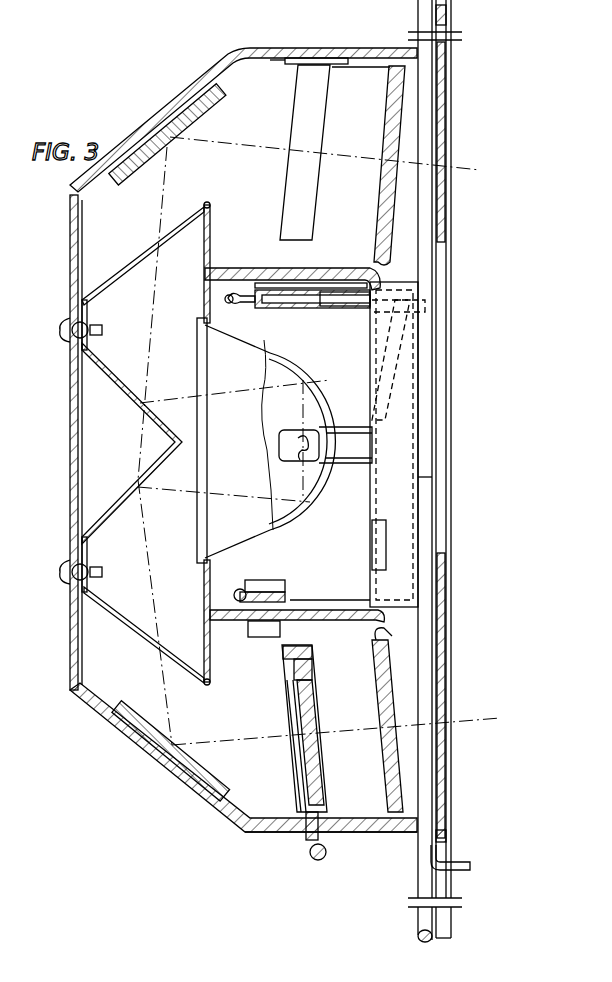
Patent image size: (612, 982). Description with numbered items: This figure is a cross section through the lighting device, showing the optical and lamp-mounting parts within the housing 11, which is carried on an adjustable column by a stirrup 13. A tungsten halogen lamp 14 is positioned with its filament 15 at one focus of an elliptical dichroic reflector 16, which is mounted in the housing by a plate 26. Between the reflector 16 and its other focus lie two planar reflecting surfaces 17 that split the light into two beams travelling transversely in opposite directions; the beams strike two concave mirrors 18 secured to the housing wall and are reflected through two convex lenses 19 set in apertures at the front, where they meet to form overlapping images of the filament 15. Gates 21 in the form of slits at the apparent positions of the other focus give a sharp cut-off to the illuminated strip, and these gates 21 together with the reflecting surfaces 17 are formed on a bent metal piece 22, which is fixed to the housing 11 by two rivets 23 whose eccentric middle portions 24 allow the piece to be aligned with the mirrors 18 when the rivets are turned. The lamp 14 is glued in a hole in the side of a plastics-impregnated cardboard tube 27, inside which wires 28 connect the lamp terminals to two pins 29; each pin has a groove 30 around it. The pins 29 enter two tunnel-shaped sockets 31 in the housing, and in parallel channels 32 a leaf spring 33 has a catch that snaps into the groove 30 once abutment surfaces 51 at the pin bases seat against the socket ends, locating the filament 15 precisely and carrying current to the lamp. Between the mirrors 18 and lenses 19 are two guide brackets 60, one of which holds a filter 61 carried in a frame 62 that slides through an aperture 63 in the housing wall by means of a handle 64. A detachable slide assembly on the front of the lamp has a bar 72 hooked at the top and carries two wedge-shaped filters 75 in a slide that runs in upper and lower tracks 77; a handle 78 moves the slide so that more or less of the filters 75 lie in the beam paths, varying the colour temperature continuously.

The housing 11 is at (258, 833).
The stirrup 13 is at (258, 592).
The tungsten halogen lamp 14 is at (308, 462).
The filament 15 is at (300, 432).
The elliptical dichroic reflector 16 is at (295, 366).
The planar reflecting surfaces 17 is at (108, 380).
The concave mirrors 18 is at (138, 165).
The convex lenses 19 is at (380, 190).
The gates 21 is at (128, 265).
The bent metal piece 22 is at (125, 390).
The rivets 23 is at (68, 336).
The eccentric middle portions 24 is at (90, 324).
The plate 26 is at (204, 255).
The plastics-impregnated cardboard tube 27 is at (418, 332).
The wires 28 is at (380, 380).
The pins 29 is at (323, 305).
The groove 30 is at (242, 304).
The sockets 31 is at (282, 308).
The channels 32 is at (262, 292).
The leaf spring 33 is at (292, 292).
The abutment surfaces 51 is at (368, 595).
The guide brackets 60 is at (290, 760).
The filter 61 is at (308, 700).
The frame 62 is at (305, 656).
The aperture 63 is at (308, 835).
The handle 64 is at (326, 852).
The bar 72 is at (446, 412).
The wedge-shaped filters 75 is at (442, 192).
The tracks 77 is at (442, 882).
The handle 78 is at (465, 855).